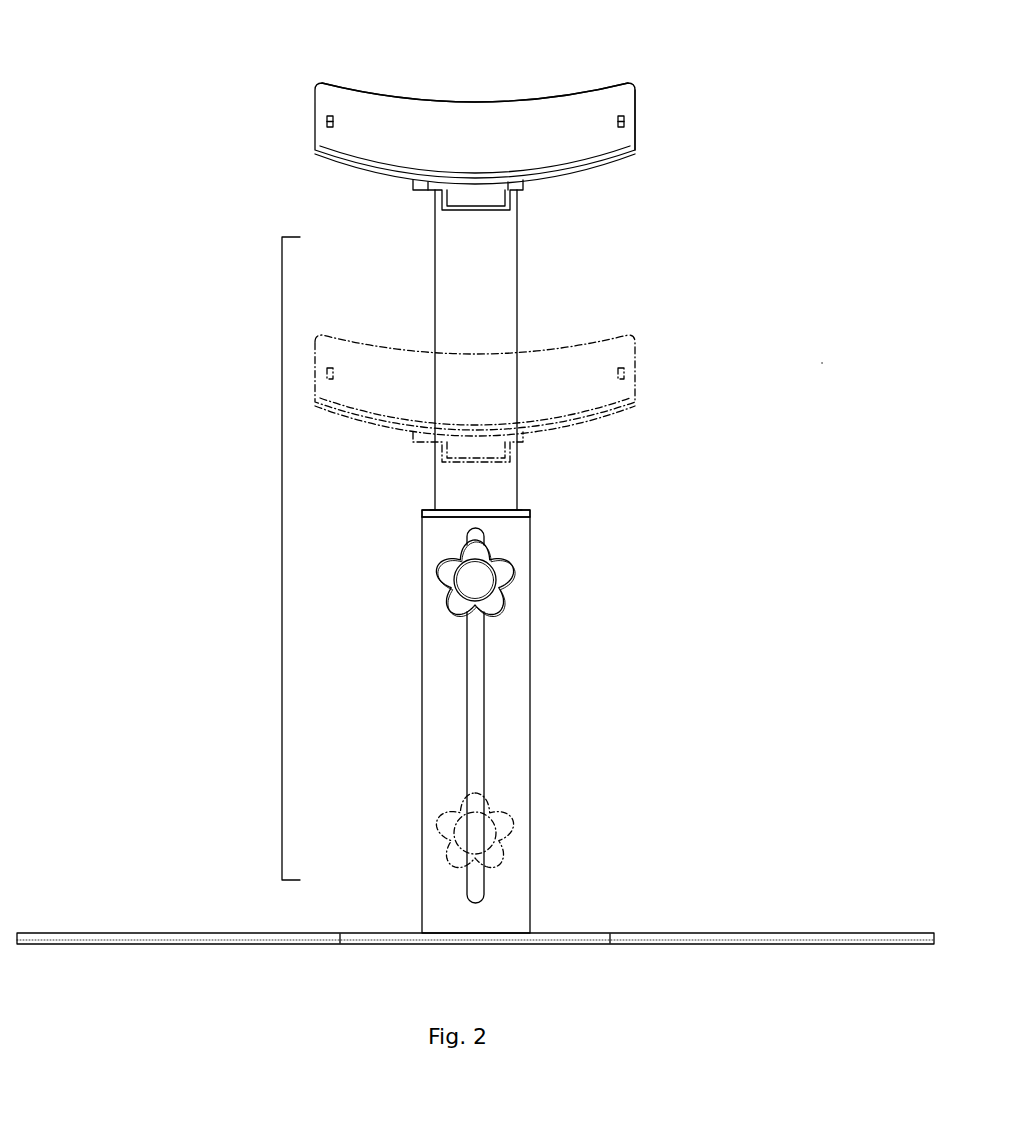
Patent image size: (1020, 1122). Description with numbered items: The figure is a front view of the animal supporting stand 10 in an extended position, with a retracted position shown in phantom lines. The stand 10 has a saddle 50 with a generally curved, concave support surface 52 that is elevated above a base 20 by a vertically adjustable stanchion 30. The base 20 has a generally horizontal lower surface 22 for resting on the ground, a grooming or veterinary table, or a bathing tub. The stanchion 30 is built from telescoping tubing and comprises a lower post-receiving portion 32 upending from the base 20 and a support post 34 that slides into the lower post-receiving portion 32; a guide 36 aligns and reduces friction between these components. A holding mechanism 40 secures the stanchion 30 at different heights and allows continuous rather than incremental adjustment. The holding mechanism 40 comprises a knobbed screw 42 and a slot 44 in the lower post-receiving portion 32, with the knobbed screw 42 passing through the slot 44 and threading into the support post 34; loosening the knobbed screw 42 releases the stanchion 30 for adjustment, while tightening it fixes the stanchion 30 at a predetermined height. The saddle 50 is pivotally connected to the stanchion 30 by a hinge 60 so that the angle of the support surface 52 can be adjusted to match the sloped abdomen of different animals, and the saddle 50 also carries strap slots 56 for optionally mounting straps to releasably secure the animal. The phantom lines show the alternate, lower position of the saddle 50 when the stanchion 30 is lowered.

The supporting stand 10 is at (822, 363).
The base 20 is at (112, 934).
The lower surface 22 is at (698, 944).
The adjustable stanchion 30 is at (273, 558).
The lower post-receiving portion 32 is at (440, 750).
The support post 34 is at (503, 325).
The guide 36 is at (522, 512).
The holding mechanism 40 is at (508, 555).
The knobbed screw 42 is at (500, 608).
The slot 44 is at (485, 735).
The saddle 50 is at (355, 85).
The support surface 52 is at (545, 110).
The strap slots 56 is at (637, 108).
The hinge 60 is at (410, 205).